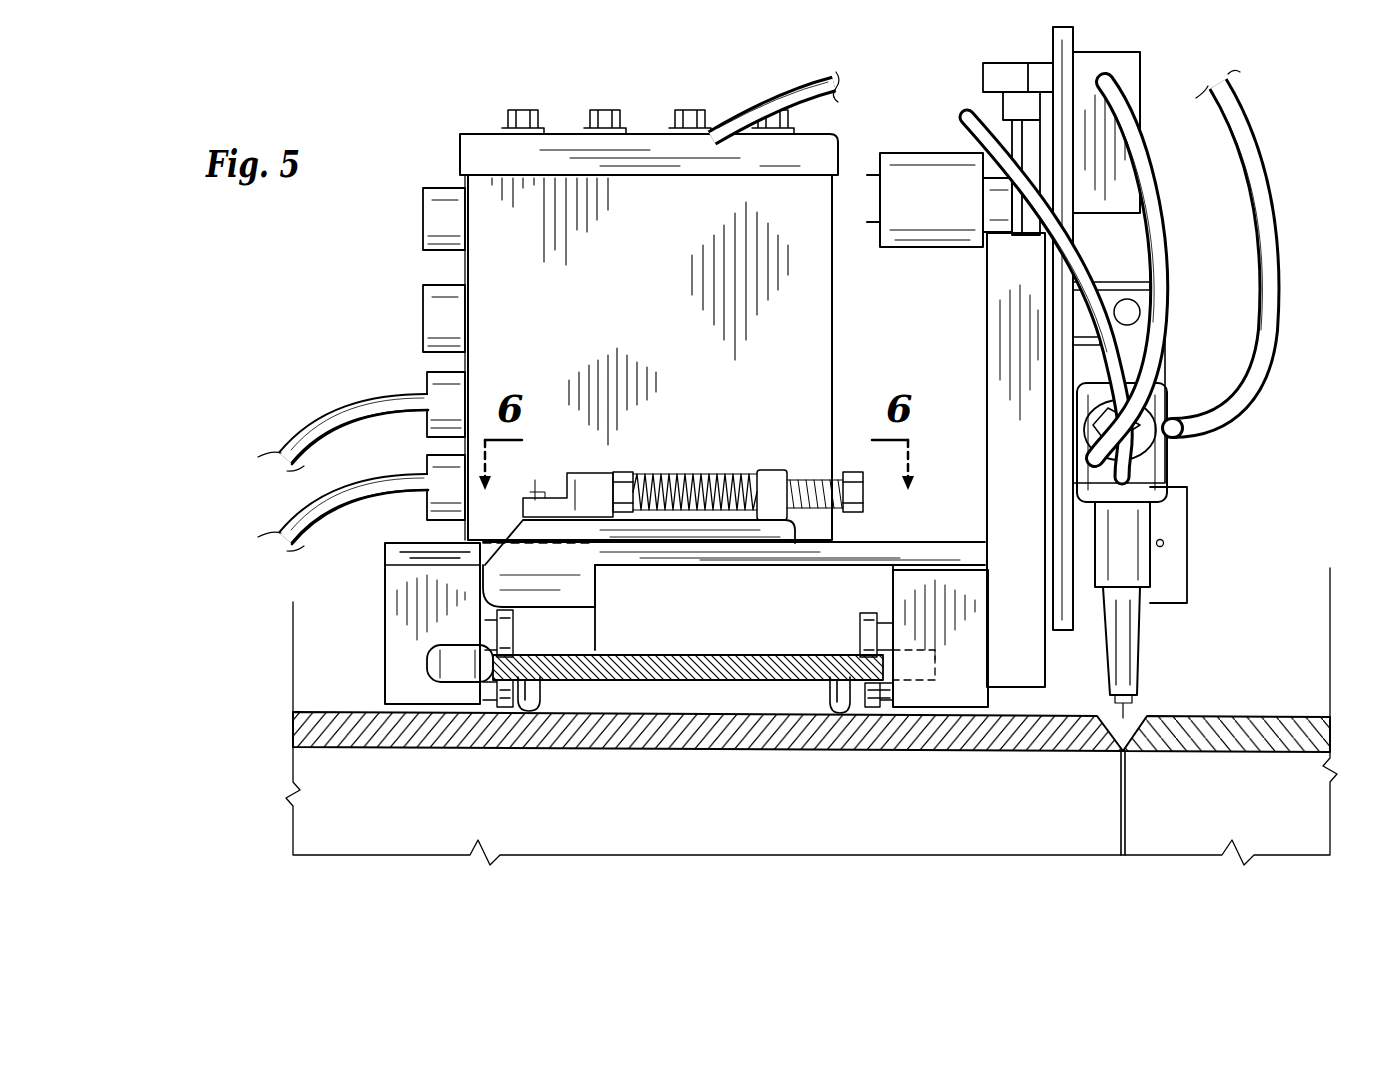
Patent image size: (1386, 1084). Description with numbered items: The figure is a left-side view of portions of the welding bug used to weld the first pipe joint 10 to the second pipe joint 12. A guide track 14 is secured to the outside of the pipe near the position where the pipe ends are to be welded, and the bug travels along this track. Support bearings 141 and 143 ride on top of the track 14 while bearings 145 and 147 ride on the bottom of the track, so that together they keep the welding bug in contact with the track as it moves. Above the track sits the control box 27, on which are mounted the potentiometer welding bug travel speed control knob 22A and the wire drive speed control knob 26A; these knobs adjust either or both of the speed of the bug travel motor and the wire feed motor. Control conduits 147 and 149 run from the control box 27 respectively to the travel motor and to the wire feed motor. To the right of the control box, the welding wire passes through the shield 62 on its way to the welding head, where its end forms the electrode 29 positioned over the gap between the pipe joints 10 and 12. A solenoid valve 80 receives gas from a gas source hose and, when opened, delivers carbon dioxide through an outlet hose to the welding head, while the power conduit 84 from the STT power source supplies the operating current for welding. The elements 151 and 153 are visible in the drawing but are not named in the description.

The first pipe joint 10 is at (1247, 732).
The second pipe joint 12 is at (377, 733).
The guide track 14 is at (683, 676).
The potentiometer welding bug travel speed control knob 22A is at (433, 208).
The wire drive speed control knob 26A is at (430, 298).
The control box 27 is at (790, 330).
The electrode 29 is at (1127, 715).
The shield 62 is at (1158, 218).
The solenoid valve 80 is at (985, 132).
The power conduit 84 is at (1270, 350).
The support bearing 141 is at (507, 622).
The support bearing 143 is at (865, 628).
The bearing 145 is at (505, 710).
The bearing / control conduit 147 is at (358, 402).
The control conduit 149 is at (296, 515).
The base block 151 is at (372, 611).
The support block 153 is at (985, 700).